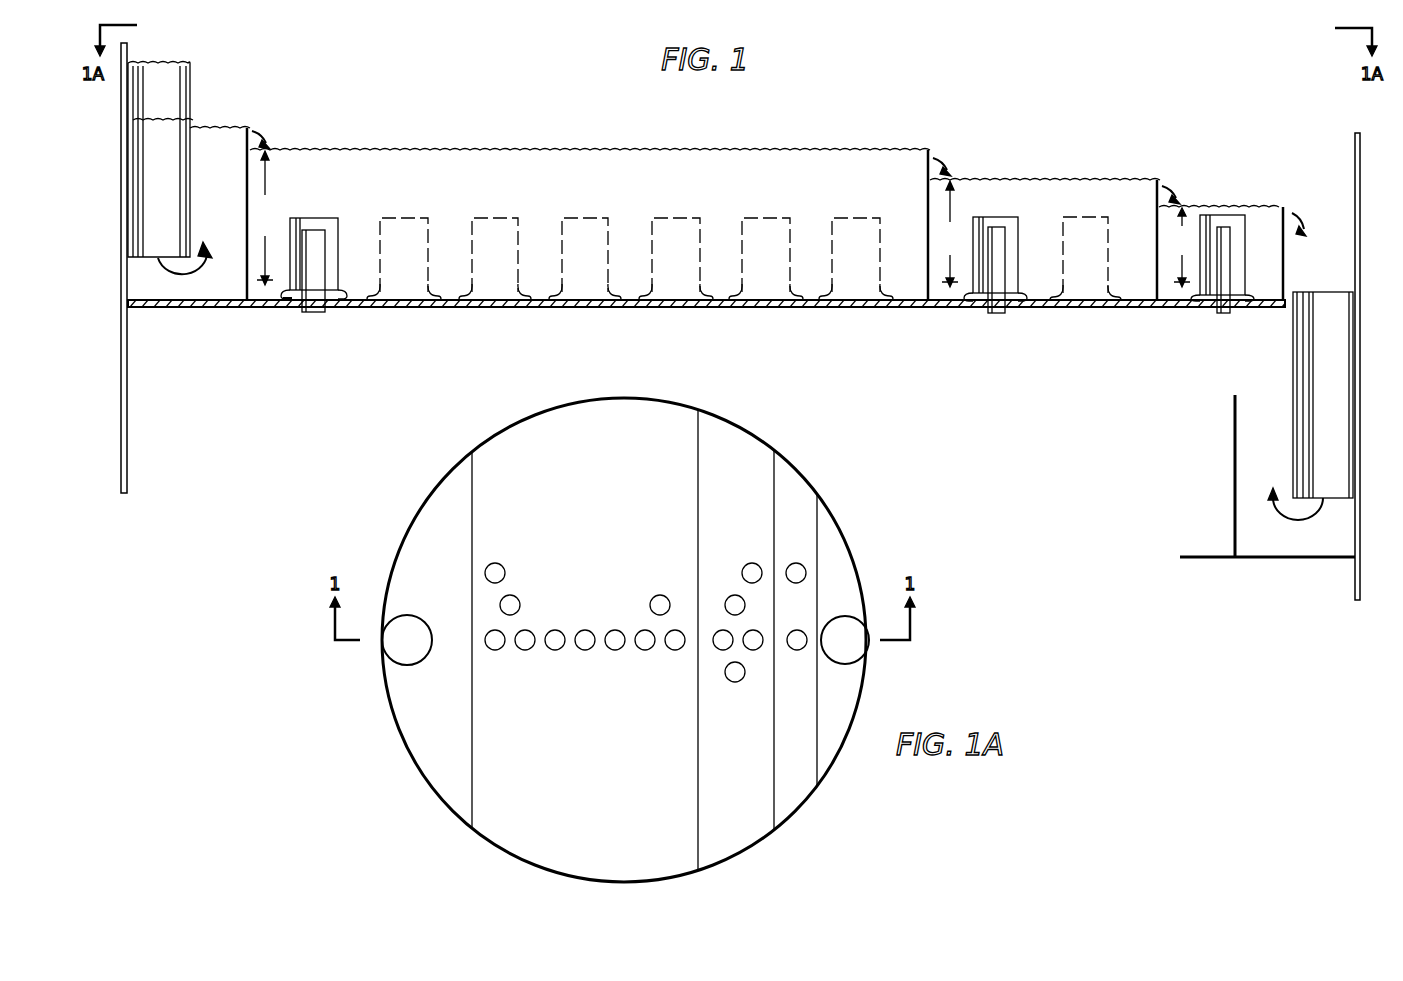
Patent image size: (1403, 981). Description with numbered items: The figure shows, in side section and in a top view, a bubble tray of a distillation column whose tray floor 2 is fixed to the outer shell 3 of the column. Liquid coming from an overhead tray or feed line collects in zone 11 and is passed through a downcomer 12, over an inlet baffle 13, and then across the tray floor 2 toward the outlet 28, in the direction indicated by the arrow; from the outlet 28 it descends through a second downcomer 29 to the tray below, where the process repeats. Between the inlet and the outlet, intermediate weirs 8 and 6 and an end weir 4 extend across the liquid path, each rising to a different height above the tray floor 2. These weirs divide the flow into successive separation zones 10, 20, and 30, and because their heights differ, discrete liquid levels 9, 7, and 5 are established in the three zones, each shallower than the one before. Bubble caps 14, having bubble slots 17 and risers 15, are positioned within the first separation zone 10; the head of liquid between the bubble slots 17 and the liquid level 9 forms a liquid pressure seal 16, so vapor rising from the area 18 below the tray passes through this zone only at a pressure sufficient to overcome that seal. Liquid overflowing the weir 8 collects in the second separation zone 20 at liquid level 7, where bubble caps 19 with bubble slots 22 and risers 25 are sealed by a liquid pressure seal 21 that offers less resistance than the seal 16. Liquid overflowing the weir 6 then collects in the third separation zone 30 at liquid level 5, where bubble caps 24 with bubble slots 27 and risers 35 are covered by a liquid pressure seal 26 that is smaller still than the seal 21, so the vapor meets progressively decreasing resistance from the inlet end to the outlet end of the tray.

In FIG. 1, the tray floor 2 is at (550, 297).
In FIG. 1, the outer shell 3 is at (118, 280).
In FIG. 1A, the outer shell 3 is at (833, 507).
In FIG. 1, the end weir 4 is at (1283, 266).
In FIG. 1A, the end weir 4 is at (845, 654).
In FIG. 1, the liquid level 5 is at (1254, 204).
In FIG. 1, the intermediate weir 6 is at (1155, 249).
In FIG. 1A, the intermediate weir 6 is at (774, 784).
In FIG. 1, the liquid level 7 is at (1026, 180).
In FIG. 1, the intermediate weir 8 is at (921, 225).
In FIG. 1A, the intermediate weir 8 is at (695, 784).
In FIG. 1, the liquid level 9 is at (726, 150).
In FIG. 1, the separation zone 10 is at (622, 288).
In FIG. 1A, the separation zone 10 is at (592, 721).
In FIG. 1, the zone 11 is at (149, 101).
In FIG. 1A, the zone 11 is at (398, 649).
In FIG. 1, the downcomer 12 is at (190, 118).
In FIG. 1A, the downcomer 12 is at (420, 622).
In FIG. 1, the inlet baffle 13 is at (252, 296).
In FIG. 1A, the inlet baffle 13 is at (470, 726).
In FIG. 1, the bubble caps 14 is at (310, 218).
In FIG. 1A, the bubble caps 14 is at (497, 650).
In FIG. 1, the risers 15 is at (326, 241).
In FIG. 1, the liquid pressure seal 16 is at (265, 218).
In FIG. 1, the bubble slots 17 is at (294, 298).
In FIG. 1, the area 18 is at (767, 342).
In FIG. 1, the bubble caps 19 is at (991, 218).
In FIG. 1A, the bubble caps 19 is at (739, 684).
In FIG. 1, the separation zone 20 is at (1029, 279).
In FIG. 1, the liquid pressure seal 21 is at (945, 234).
In FIG. 1, the bubble slots 22 is at (977, 304).
In FIG. 1, the bubble caps 24 is at (1216, 215).
In FIG. 1A, the bubble caps 24 is at (797, 650).
In FIG. 1, the risers 25 is at (1008, 307).
In FIG. 1, the liquid pressure seal 26 is at (1180, 247).
In FIG. 1, the bubble slots 27 is at (1210, 303).
In FIG. 1, the outlet 28 is at (1319, 349).
In FIG. 1, the downcomer 29 is at (1293, 391).
In FIG. 1, the separation zone 30 is at (1254, 239).
In FIG. 1A, the separation zone 30 is at (784, 721).
In FIG. 1, the risers 35 is at (1234, 308).